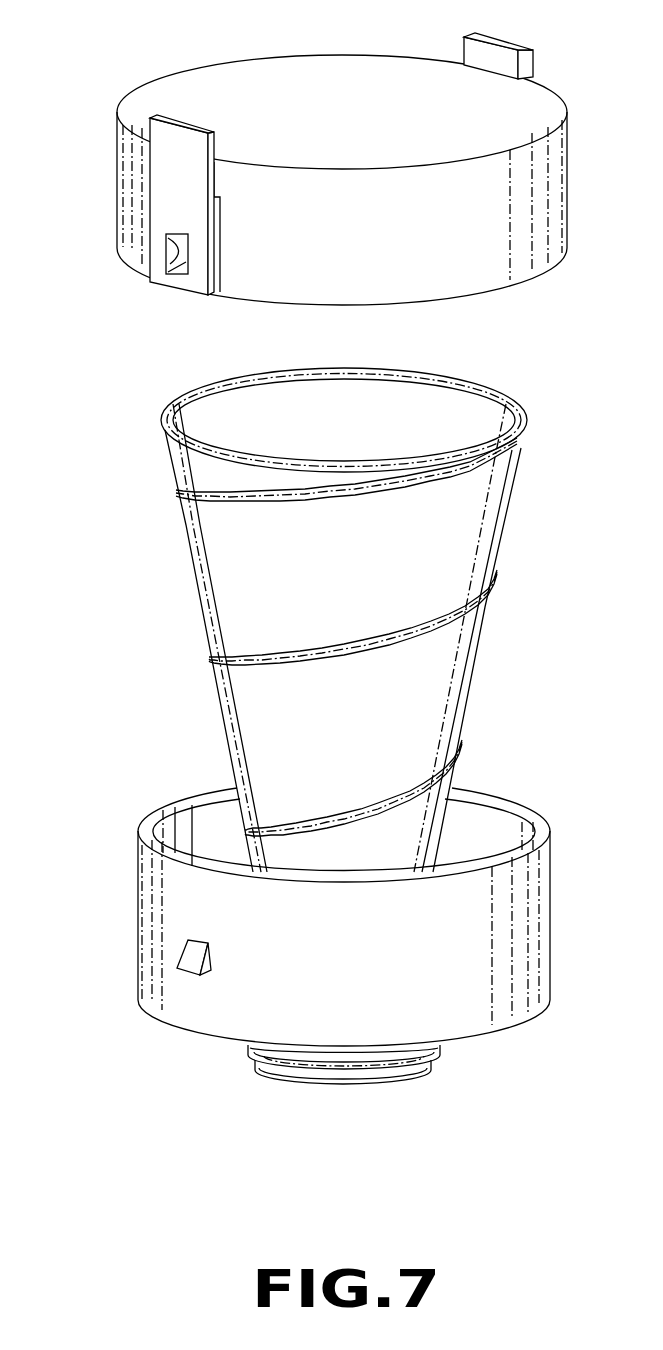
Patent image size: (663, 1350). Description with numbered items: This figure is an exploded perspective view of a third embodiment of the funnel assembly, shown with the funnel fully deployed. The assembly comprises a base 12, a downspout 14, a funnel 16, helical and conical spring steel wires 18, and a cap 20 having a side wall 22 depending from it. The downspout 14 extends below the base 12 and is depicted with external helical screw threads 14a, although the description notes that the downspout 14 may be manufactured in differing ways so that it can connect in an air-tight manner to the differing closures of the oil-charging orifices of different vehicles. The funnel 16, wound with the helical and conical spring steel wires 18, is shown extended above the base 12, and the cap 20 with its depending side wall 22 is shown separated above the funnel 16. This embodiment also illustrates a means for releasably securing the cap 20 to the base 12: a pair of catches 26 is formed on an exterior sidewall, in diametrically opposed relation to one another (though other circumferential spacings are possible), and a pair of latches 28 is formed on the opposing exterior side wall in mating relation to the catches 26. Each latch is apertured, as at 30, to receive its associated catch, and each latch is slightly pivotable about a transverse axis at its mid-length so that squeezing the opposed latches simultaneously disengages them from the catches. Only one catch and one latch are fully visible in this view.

The base 12 is at (346, 1013).
The downspout 14 is at (287, 1083).
The external helical screw threads 14a is at (343, 1063).
The funnel 16 is at (192, 552).
The helical and conical spring steel wires 18 is at (393, 630).
The cap 20 is at (314, 131).
The side wall 22 is at (364, 253).
The catches 26 is at (198, 118).
The latches 28 is at (180, 956).
The aperture 30 is at (165, 237).